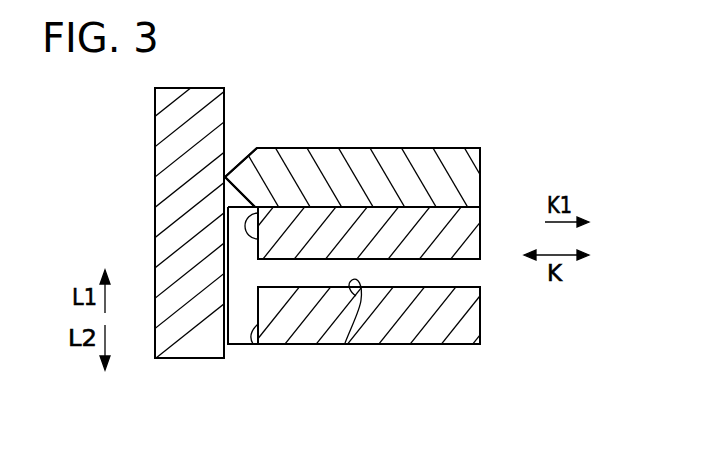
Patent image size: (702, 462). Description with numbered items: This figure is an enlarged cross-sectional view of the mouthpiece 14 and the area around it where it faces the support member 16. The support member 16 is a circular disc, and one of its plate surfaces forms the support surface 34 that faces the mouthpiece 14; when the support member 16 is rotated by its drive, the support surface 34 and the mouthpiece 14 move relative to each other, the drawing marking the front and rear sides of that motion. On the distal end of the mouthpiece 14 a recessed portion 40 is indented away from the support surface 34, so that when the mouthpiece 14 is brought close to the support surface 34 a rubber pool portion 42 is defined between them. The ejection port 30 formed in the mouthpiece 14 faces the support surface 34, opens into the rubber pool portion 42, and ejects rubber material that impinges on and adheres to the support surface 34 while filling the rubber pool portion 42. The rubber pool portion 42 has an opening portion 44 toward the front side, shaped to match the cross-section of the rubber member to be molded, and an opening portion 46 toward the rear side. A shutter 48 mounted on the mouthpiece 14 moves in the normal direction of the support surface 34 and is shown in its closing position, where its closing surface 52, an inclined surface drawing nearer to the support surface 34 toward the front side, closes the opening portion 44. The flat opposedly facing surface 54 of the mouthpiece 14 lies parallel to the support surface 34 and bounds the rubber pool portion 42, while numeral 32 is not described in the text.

The mouthpiece 14 is at (411, 345).
The support member 16 is at (157, 133).
The ejection port 30 is at (262, 273).
The lower arm inner surface 32 is at (345, 343).
The support surface 34 is at (223, 98).
The recessed portion 40 is at (252, 345).
The rubber pool portion 42 is at (185, 358).
The opening portion 44 is at (238, 222).
The opening portion 46 is at (238, 345).
The shutter 48 is at (387, 155).
The closing surface 52 is at (232, 192).
The opposedly facing surface 54 is at (255, 206).